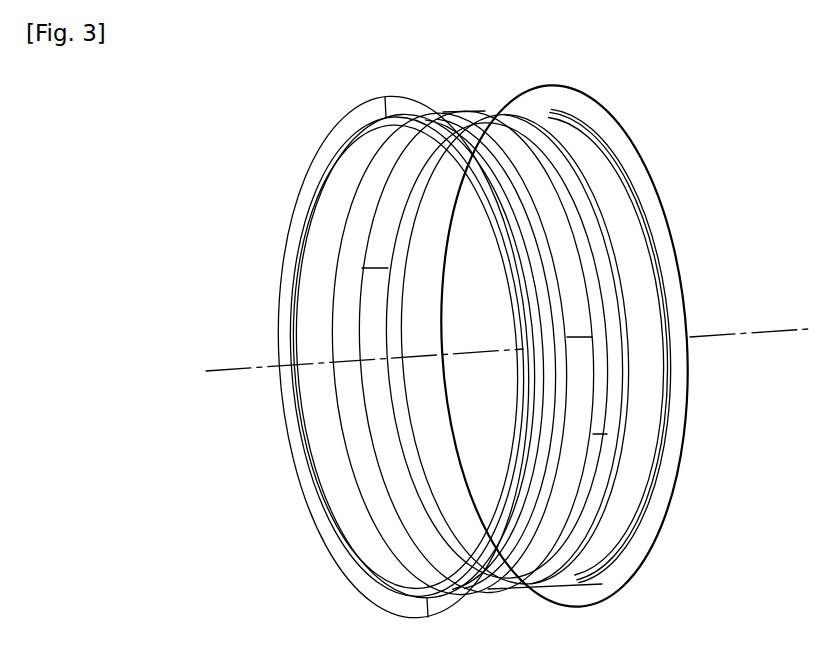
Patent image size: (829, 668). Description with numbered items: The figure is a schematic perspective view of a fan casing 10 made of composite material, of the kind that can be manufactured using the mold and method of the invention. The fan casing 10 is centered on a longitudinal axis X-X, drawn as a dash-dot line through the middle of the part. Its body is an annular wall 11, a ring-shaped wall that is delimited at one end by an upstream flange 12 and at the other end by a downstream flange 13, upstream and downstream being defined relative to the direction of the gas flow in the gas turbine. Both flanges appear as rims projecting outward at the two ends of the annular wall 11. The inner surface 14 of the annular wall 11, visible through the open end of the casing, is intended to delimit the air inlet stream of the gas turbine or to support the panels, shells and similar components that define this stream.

The fan casing 10 is at (703, 239).
The annular wall 11 is at (602, 450).
The upstream flange 12 is at (305, 487).
The downstream flange 13 is at (632, 143).
The inner surface 14 is at (347, 290).